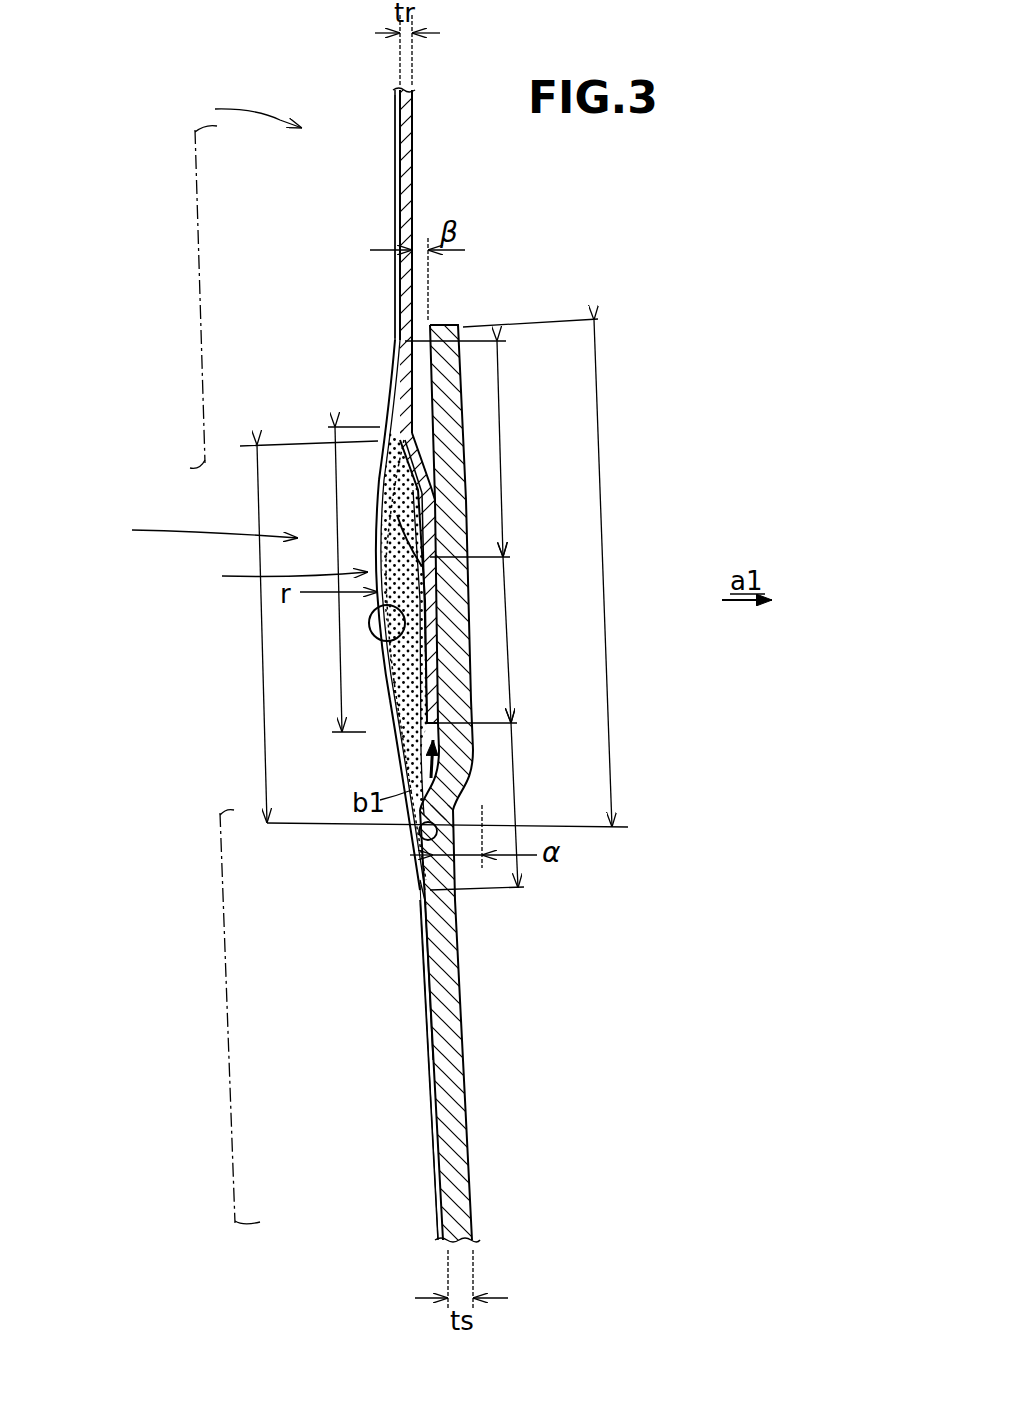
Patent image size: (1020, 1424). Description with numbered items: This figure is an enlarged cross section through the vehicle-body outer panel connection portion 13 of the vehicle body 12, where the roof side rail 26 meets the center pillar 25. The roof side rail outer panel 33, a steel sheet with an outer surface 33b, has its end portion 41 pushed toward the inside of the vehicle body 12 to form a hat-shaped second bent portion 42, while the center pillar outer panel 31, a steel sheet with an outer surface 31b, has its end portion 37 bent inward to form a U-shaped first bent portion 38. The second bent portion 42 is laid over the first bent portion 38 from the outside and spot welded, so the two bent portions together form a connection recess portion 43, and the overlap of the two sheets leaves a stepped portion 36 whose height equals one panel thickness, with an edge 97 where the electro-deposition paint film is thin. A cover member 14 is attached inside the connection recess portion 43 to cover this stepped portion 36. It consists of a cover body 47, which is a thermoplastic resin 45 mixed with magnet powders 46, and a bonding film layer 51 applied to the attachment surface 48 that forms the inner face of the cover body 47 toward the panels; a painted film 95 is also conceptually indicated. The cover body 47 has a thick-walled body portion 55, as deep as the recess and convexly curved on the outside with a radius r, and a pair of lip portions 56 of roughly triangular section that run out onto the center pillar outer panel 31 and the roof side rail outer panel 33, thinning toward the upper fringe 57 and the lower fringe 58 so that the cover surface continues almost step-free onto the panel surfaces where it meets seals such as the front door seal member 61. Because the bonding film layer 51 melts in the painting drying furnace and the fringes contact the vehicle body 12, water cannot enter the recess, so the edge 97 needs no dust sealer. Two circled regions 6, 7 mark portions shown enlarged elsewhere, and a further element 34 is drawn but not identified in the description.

The enlarged portion (circle) 6 is at (370, 628).
The enlarged portion (circle) 7 is at (437, 832).
The vehicle body 12 is at (241, 110).
The vehicle-body outer panel connection portion 13 is at (198, 531).
The cover member 14 is at (276, 578).
The center pillar 25 is at (432, 1040).
The roof side rail 26 is at (395, 100).
The center pillar outer panel 31 is at (470, 1045).
The surface 31b is at (437, 1020).
The roof side rail outer panel 33 is at (393, 178).
The surface 33b is at (393, 232).
The outer skin 34 is at (388, 708).
The stepped portion 36 is at (397, 762).
The end portion 37 is at (470, 913).
The first bent portion 38 is at (599, 432).
The end portion 41 is at (415, 306).
The second bent portion 42 is at (336, 466).
The connection recess portion 43 is at (258, 494).
The thermoplastic resin 45 is at (385, 656).
The magnet powders 46 is at (420, 690).
The cover body 47 is at (408, 736).
The attachment surface 48 is at (432, 472).
The bonding film layer 51 is at (436, 515).
The body portion 55 is at (508, 612).
The lip portions 56 is at (500, 413).
The upper fringe 57 is at (393, 350).
The lower fringe 58 is at (426, 898).
The front door seal member 61 is at (198, 230).
The painted film 95 is at (423, 855).
The edge 97 is at (415, 775).